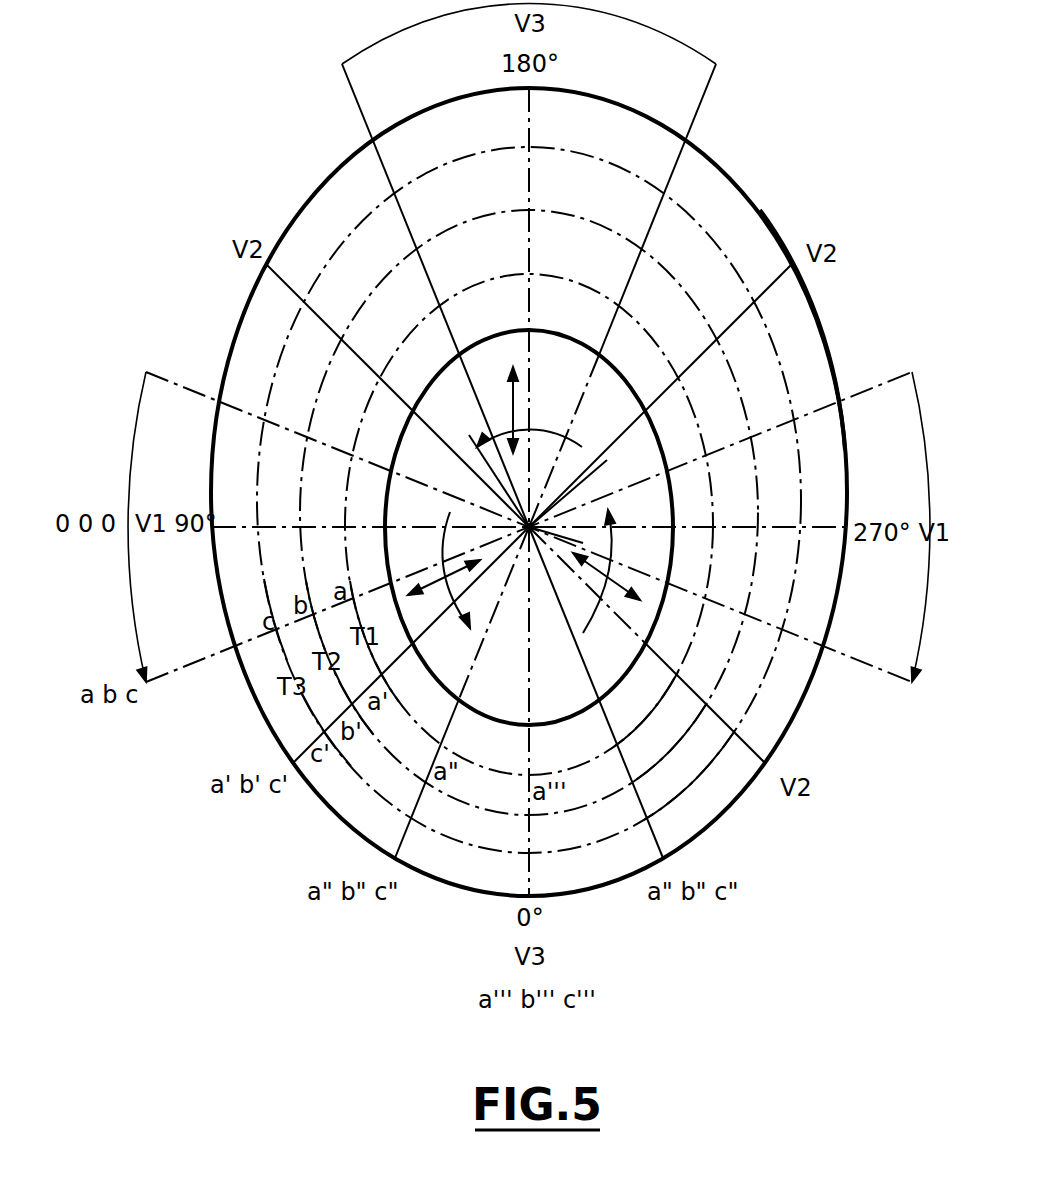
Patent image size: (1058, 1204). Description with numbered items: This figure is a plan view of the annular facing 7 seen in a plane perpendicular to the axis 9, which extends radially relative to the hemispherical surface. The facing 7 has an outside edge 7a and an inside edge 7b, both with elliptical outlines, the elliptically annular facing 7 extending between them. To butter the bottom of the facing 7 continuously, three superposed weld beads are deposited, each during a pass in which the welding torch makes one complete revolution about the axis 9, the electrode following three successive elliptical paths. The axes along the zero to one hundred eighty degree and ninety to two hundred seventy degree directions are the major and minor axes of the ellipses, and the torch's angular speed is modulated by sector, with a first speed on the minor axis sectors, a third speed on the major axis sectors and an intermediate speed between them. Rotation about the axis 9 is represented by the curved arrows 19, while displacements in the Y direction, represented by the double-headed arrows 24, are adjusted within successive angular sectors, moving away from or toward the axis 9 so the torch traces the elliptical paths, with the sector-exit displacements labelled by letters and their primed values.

The facing 7 is at (755, 848).
The outside edge 7a is at (838, 382).
The inside edge 7b is at (658, 476).
The axis 9 is at (530, 531).
The curved arrows 19 is at (580, 440).
The double-headed arrows 24 is at (513, 405).